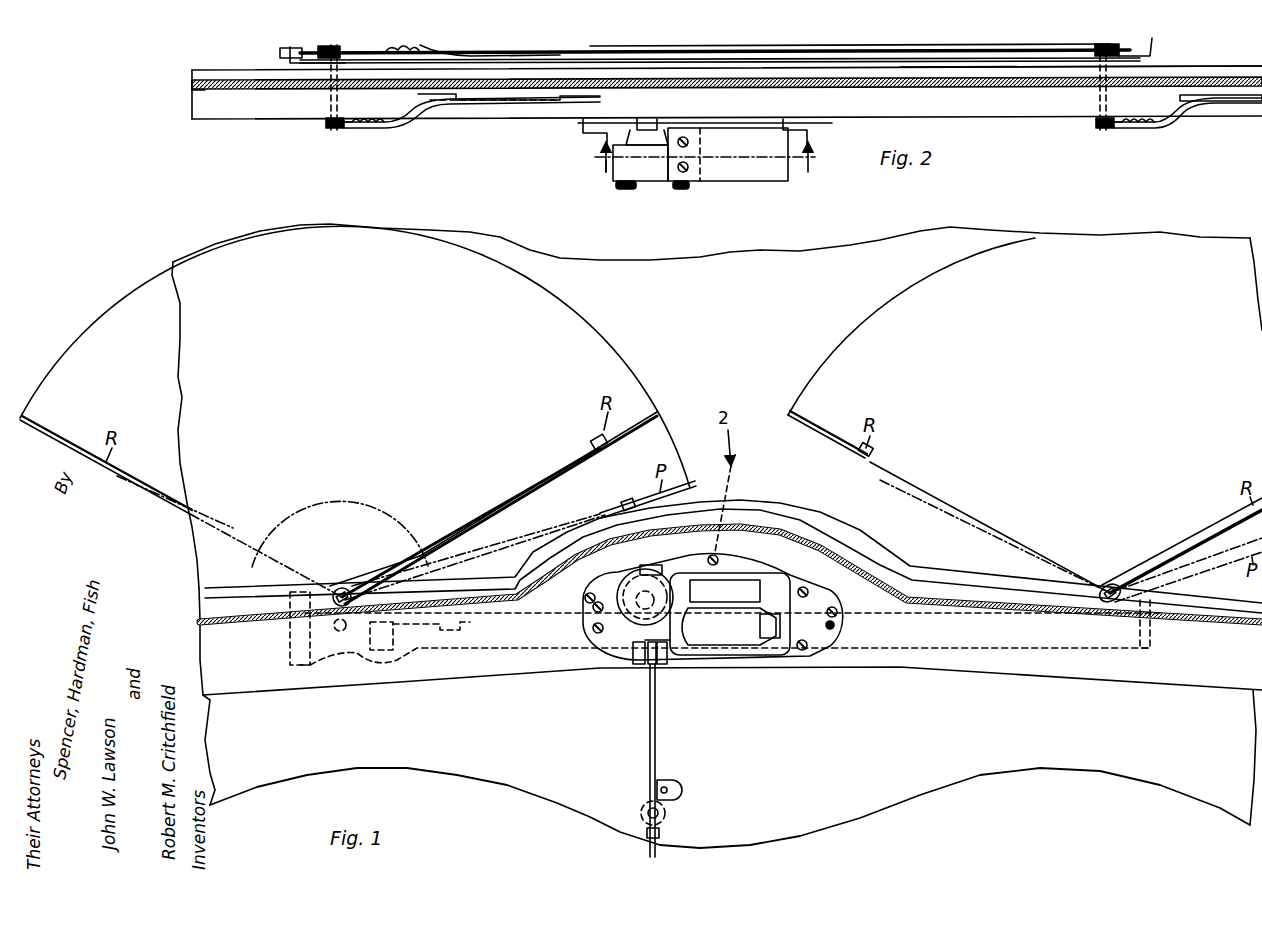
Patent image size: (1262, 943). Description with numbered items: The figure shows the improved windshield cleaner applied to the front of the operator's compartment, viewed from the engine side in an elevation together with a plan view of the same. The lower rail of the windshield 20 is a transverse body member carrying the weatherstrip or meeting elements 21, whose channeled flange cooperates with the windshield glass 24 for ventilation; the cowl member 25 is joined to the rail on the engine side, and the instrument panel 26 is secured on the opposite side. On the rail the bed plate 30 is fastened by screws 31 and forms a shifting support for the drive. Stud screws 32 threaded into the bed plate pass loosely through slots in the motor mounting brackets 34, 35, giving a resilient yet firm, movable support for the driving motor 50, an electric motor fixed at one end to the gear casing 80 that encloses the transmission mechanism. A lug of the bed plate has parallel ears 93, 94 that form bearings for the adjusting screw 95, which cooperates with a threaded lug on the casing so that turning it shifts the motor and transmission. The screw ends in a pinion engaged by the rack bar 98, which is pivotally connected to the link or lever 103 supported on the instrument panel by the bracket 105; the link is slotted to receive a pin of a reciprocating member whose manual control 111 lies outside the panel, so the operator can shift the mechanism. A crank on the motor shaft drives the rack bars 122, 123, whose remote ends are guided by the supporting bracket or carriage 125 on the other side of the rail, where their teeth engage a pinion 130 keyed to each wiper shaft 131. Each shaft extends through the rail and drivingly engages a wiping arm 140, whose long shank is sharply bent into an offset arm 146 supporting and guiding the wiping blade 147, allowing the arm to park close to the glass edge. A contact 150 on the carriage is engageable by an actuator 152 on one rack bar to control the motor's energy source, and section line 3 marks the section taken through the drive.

In FIG. 2, the lower rail of the windshield 20 is at (1200, 66).
In FIG. 1, the lower rail of the windshield 20 is at (1208, 688).
In FIG. 1, the weatherstrip or meeting elements 21 is at (972, 578).
In FIG. 2, the windshield glass 24 is at (190, 100).
In FIG. 1, the windshield glass 24 is at (898, 247).
In FIG. 1, the cowl member 25 is at (897, 560).
In FIG. 1, the instrument panel 26 is at (1018, 766).
In FIG. 1, the bed plate 30 is at (700, 553).
In FIG. 1, the screws 31 is at (720, 560).
In FIG. 1, the stud screws 32 is at (804, 586).
In FIG. 2, the motor mounting bracket 34 is at (592, 155).
In FIG. 1, the motor mounting bracket 34 is at (592, 630).
In FIG. 2, the motor mounting bracket 35 is at (822, 153).
In FIG. 1, the motor mounting bracket 35 is at (836, 628).
In FIG. 2, the section line 3 is at (708, 166).
In FIG. 2, the driving motor 50 is at (800, 198).
In FIG. 1, the driving motor 50 is at (745, 658).
In FIG. 2, the gear casing 80 is at (652, 183).
In FIG. 1, the ear 93 is at (636, 650).
In FIG. 1, the ear 94 is at (664, 660).
In FIG. 1, the adjusting screw 95 is at (650, 660).
In FIG. 1, the rack bar 98 is at (658, 711).
In FIG. 1, the link or lever 103 is at (662, 836).
In FIG. 1, the bracket 105 is at (678, 785).
In FIG. 1, the manual control 111 is at (668, 808).
In FIG. 2, the rack bar 122 is at (580, 56).
In FIG. 2, the rack bar 123 is at (808, 46).
In FIG. 2, the supporting bracket or carriage 125 is at (940, 48).
In FIG. 1, the supporting bracket or carriage 125 is at (475, 650).
In FIG. 2, the pinion 130 is at (1118, 48).
In FIG. 2, the wiper shaft 131 is at (1158, 128).
In FIG. 2, the wiping arm 140 is at (395, 130).
In FIG. 1, the wiping arm 140 is at (385, 563).
In FIG. 2, the offset arm 146 is at (546, 100).
In FIG. 2, the wiping blade 147 is at (488, 98).
In FIG. 2, the contact 150 is at (392, 50).
In FIG. 2, the actuator 152 is at (430, 52).
In FIG. 1, the actuator 152 is at (389, 628).